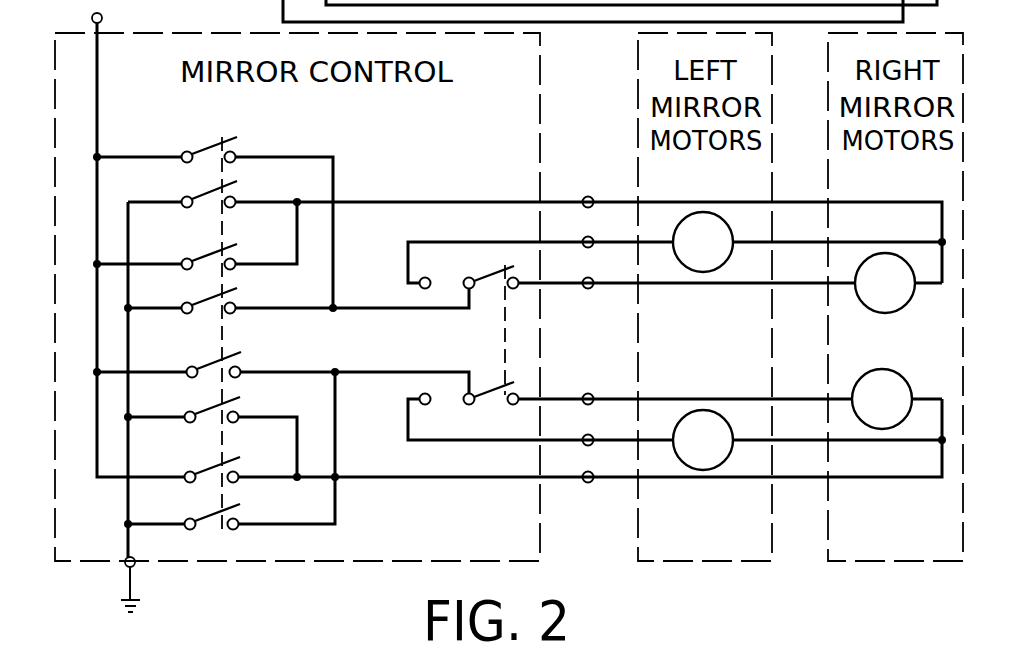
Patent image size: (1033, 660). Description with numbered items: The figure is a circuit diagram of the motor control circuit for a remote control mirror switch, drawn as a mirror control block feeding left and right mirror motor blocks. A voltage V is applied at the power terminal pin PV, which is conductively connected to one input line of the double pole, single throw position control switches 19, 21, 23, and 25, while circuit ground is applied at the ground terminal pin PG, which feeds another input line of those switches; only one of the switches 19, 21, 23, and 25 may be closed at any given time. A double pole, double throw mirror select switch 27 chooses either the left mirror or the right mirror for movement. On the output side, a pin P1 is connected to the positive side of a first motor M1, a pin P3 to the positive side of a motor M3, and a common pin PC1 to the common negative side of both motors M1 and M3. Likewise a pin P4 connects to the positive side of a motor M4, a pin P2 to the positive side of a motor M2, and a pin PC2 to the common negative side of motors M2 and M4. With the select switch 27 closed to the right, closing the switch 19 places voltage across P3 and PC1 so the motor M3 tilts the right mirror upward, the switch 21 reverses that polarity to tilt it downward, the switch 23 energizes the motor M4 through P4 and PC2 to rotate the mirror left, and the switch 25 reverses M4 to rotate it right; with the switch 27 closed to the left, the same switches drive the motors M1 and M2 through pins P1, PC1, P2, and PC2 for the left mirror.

The position control switch 19 is at (203, 148).
The position control switch 21 is at (207, 258).
The position control switch 23 is at (209, 366).
The position control switch 25 is at (208, 471).
The mirror select switch 27 is at (482, 286).
The power terminal pin PV is at (131, 14).
The ground terminal pin PG is at (136, 567).
The common conducting pin PC1 is at (588, 196).
The common conducting pin PC2 is at (588, 483).
The conducting pin P1 is at (588, 236).
The conducting pin P2 is at (588, 434).
The conducting pin P3 is at (588, 277).
The conducting pin P4 is at (588, 393).
The first motor M1 is at (703, 242).
The motor M2 is at (703, 440).
The motor M3 is at (883, 283).
The motor M4 is at (882, 396).